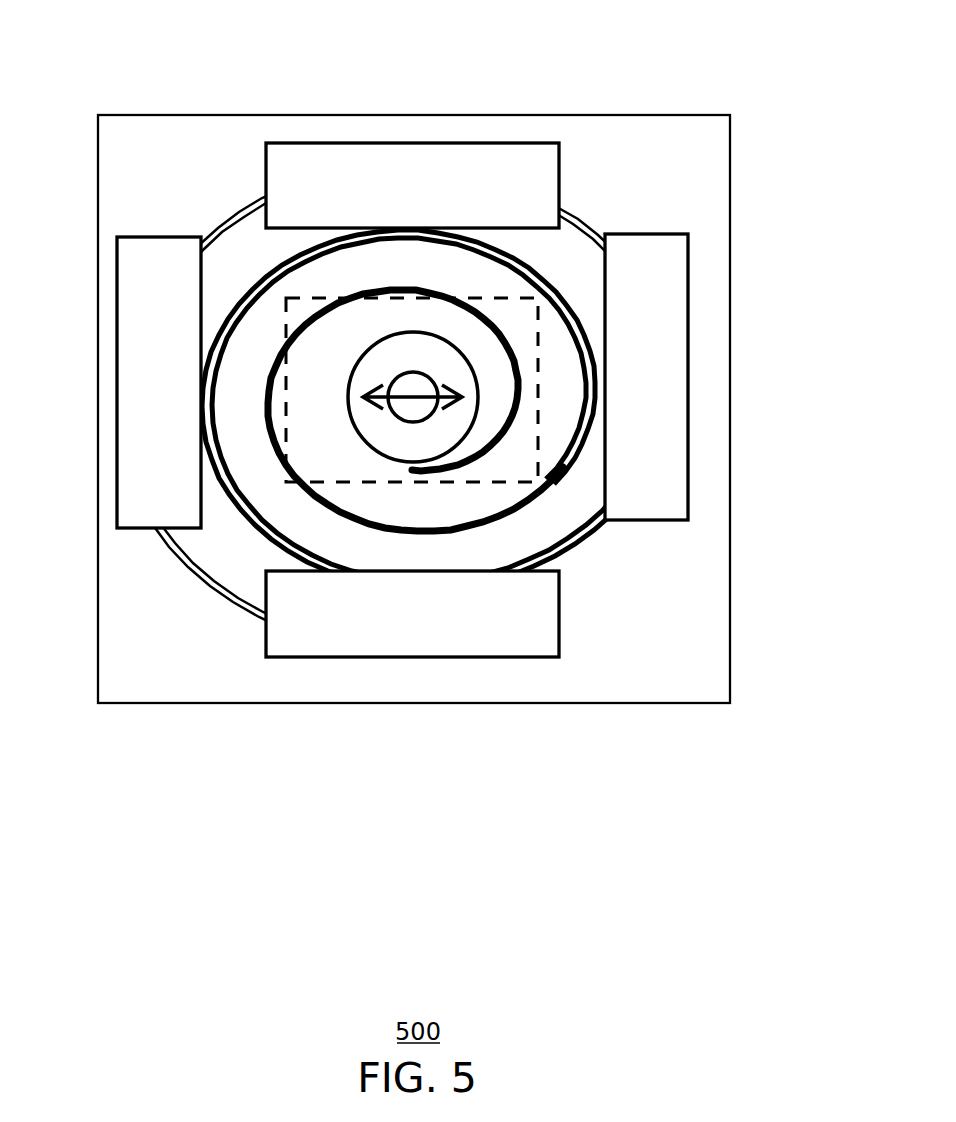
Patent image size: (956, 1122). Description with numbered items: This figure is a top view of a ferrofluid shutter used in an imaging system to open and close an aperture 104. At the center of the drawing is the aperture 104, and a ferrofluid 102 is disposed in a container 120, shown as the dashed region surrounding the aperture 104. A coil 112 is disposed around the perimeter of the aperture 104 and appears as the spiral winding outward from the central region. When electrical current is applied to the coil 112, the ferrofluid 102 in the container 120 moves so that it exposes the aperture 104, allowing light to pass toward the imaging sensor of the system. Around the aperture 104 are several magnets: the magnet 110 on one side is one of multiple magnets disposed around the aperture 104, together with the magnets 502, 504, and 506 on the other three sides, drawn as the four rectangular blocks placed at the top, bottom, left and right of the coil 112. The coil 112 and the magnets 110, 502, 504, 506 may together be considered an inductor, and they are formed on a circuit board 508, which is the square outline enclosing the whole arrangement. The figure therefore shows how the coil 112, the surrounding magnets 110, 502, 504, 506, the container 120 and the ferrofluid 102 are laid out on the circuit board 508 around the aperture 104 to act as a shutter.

The ferrofluid 102 is at (358, 435).
The aperture 104 is at (413, 370).
The magnet 110 is at (117, 318).
The coil 112 is at (587, 540).
The container 120 is at (538, 298).
The magnet 502 is at (690, 330).
The magnet 504 is at (396, 657).
The magnet 506 is at (460, 143).
The circuit board 508 is at (648, 703).